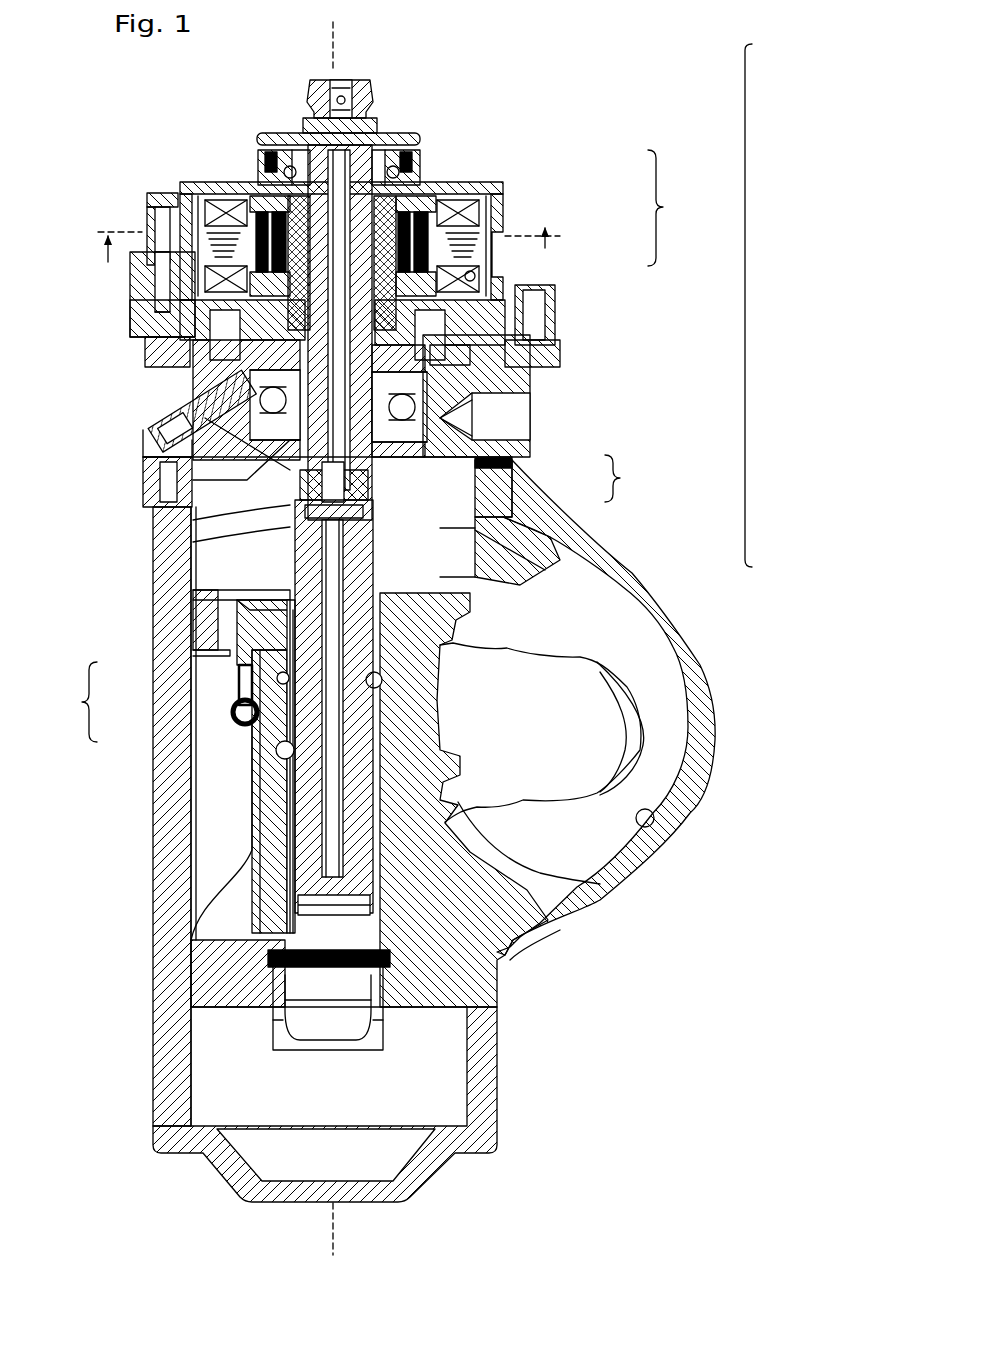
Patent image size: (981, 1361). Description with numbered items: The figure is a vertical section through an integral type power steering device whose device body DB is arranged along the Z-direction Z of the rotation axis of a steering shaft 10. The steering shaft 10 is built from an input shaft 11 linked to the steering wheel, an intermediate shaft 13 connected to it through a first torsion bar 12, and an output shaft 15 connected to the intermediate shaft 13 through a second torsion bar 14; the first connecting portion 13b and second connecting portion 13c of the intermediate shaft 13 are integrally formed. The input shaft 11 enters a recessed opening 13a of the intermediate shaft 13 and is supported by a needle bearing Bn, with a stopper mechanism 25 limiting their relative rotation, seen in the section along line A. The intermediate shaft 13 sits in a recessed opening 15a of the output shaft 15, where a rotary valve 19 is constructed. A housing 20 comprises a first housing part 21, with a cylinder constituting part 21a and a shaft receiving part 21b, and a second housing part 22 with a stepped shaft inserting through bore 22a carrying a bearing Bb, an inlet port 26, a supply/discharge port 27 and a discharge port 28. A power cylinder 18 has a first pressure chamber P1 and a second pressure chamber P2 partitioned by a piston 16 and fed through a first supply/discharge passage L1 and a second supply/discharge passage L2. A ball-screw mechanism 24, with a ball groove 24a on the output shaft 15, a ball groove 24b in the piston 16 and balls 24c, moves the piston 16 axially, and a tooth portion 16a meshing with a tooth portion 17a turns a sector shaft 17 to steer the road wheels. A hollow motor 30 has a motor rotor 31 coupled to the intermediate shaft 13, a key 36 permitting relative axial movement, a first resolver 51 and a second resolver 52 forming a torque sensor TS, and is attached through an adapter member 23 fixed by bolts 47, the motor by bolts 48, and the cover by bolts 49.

The steering shaft 10 is at (745, 305).
The input shaft 11 is at (380, 115).
The first torsion bar 12 is at (423, 138).
The intermediate shaft 13 is at (520, 362).
The recessed opening 13a is at (455, 232).
The first connecting portion 13b is at (262, 168).
The second connecting portion 13c is at (300, 518).
The second torsion bar 14 is at (560, 545).
The output shaft 15 is at (540, 578).
The recessed opening 15a is at (132, 344).
The piston 16 is at (434, 1013).
The tooth portion 16a is at (466, 902).
The sector shaft 17 is at (623, 725).
The tooth portion 17a is at (520, 828).
The power cylinder 18 is at (178, 862).
The rotary valve 19 is at (155, 394).
The housing 20 is at (625, 478).
The first housing part 21 is at (493, 497).
The cylinder constituting part 21a is at (195, 785).
The shaft receiving part 21b is at (673, 847).
The second housing part 22 is at (505, 463).
The shaft inserting through bore 22a is at (445, 372).
The adapter member 23 is at (545, 350).
The ball-screw mechanism 24 is at (176, 766).
The ball groove 24a is at (258, 712).
The ball groove 24b is at (242, 668).
The balls 24c is at (278, 752).
The stopper mechanism 25 is at (215, 242).
The inlet port 26 is at (505, 418).
The supply/discharge port 27 is at (445, 412).
The discharge port 28 is at (465, 365).
The hollow motor 30 is at (510, 194).
The motor rotor 31 is at (142, 277).
The key 36 is at (132, 297).
The bolts 47 is at (132, 314).
The bolts 48 is at (545, 300).
The bolts 49 is at (165, 203).
The first resolver 51 is at (450, 198).
The second resolver 52 is at (455, 270).
The section line A- A is at (326, 248).
The bearing Bb is at (262, 394).
The needle bearing Bn is at (478, 272).
The power steering device body DB is at (718, 752).
The first supply/discharge passage L1 is at (292, 522).
The second supply/discharge passage L2 is at (160, 465).
The first pressure chamber P1 is at (212, 570).
The second pressure chamber P2 is at (192, 1083).
The torque sensor TS is at (670, 208).
The Z-direction Z is at (338, 40).